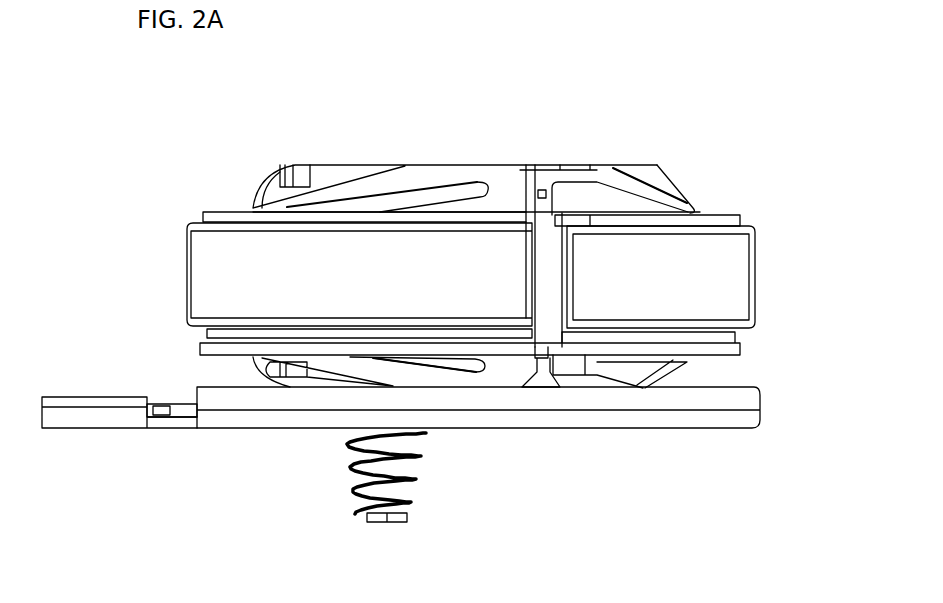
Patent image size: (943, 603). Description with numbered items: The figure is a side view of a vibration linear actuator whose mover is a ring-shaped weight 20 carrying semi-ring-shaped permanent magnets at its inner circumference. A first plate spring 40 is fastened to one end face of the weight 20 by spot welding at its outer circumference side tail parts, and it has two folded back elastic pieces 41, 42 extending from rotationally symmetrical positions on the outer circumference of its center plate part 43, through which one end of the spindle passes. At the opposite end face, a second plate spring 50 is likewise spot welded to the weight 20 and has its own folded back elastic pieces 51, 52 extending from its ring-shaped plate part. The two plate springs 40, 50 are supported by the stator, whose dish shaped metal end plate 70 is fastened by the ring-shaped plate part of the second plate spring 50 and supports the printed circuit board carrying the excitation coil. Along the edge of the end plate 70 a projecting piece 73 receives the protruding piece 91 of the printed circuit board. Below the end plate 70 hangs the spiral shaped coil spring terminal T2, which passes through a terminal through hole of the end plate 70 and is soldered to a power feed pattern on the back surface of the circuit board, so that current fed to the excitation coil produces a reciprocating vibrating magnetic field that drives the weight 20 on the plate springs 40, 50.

The ring-shaped weight 20 is at (516, 286).
The first plate spring 40 is at (397, 152).
The folded back elastic piece 41 is at (727, 214).
The folded back elastic piece 42 is at (243, 212).
The center plate part 43 is at (466, 165).
The second plate spring 50 is at (748, 366).
The folded back elastic piece 51 is at (657, 336).
The folded back elastic piece 52 is at (320, 350).
The metal end plate 70 is at (618, 447).
The projecting piece 73 is at (101, 418).
The protruding piece 91 is at (168, 406).
The coil spring terminal T2 is at (400, 522).